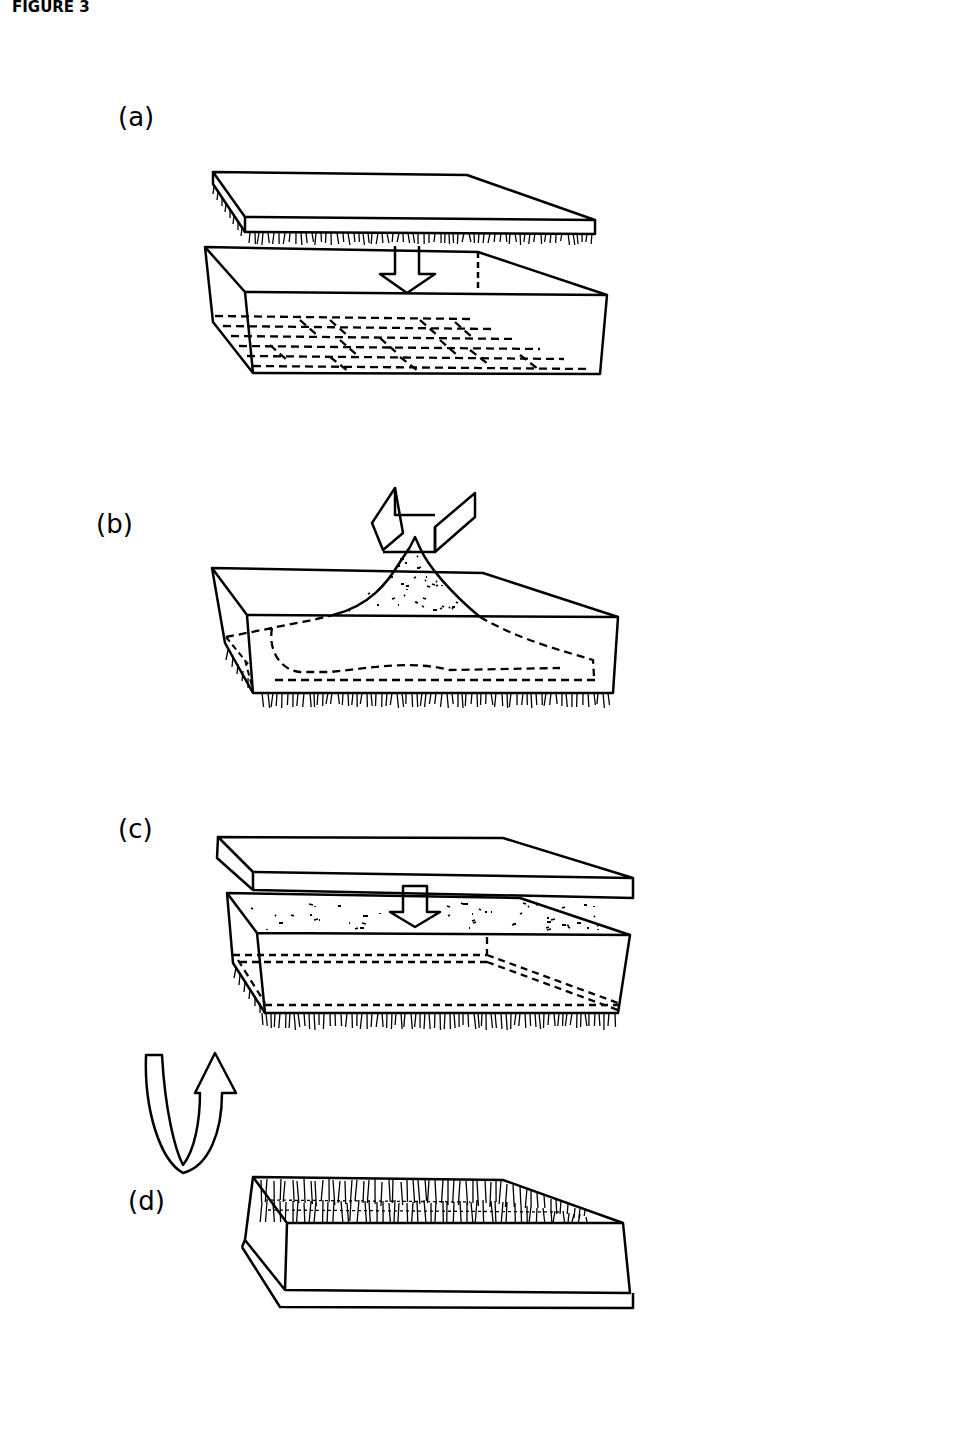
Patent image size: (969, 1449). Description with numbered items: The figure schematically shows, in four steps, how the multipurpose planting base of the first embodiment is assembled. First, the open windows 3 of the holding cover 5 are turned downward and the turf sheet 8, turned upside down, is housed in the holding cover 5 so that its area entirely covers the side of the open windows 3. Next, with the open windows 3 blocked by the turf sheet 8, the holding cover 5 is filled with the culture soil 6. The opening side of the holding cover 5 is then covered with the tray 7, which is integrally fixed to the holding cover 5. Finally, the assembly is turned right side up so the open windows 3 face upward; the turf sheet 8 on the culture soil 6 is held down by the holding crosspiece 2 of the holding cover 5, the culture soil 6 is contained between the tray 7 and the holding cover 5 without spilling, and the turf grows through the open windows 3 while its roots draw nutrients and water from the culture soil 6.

The holding crosspiece 2 is at (345, 1177).
The open windows 3 is at (415, 356).
The holding cover 5 is at (595, 330).
The culture soil 6 is at (452, 590).
The tray 7 is at (557, 865).
The turf sheet 8 is at (502, 205).